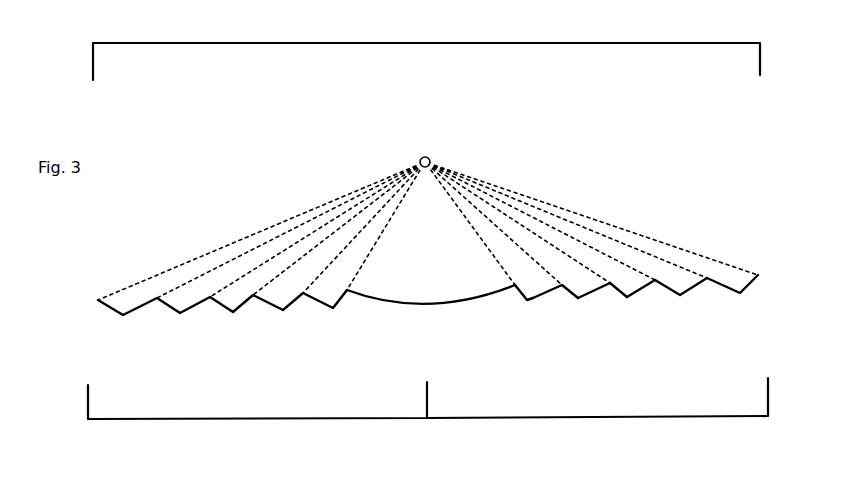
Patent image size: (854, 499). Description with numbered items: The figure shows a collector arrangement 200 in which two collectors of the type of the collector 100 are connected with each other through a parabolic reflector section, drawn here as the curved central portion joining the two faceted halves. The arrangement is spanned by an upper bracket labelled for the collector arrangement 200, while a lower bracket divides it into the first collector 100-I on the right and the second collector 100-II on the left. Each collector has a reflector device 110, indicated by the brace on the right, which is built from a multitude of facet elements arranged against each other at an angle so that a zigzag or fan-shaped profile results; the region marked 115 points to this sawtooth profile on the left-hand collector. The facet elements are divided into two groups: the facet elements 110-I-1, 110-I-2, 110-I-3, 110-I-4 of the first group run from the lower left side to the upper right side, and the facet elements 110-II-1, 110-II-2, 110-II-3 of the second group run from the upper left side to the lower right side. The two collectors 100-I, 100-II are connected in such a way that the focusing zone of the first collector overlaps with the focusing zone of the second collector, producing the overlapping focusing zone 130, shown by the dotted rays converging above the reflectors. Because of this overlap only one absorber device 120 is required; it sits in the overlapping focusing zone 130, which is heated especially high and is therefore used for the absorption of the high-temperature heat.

The collector arrangement 200 is at (382, 35).
The collector 100 is at (618, 127).
The absorber device 120 is at (423, 154).
The overlapping focusing zone 130 is at (432, 155).
The reflector device 110 is at (773, 258).
The sawtooth facets of first region 115 is at (198, 332).
The facet element of second group 110-II-1 is at (530, 290).
The facet element of second group 110-II-2 is at (575, 290).
The facet element of second group 110-II-3 is at (623, 288).
The facet element of first group 110-I-1 is at (537, 300).
The facet element of first group 110-I-2 is at (600, 290).
The facet element of first group 110-I-3 is at (650, 303).
The facet element of first group 110-I-4 is at (702, 287).
The second collector 100-II is at (257, 421).
The first collector 100-I is at (597, 413).